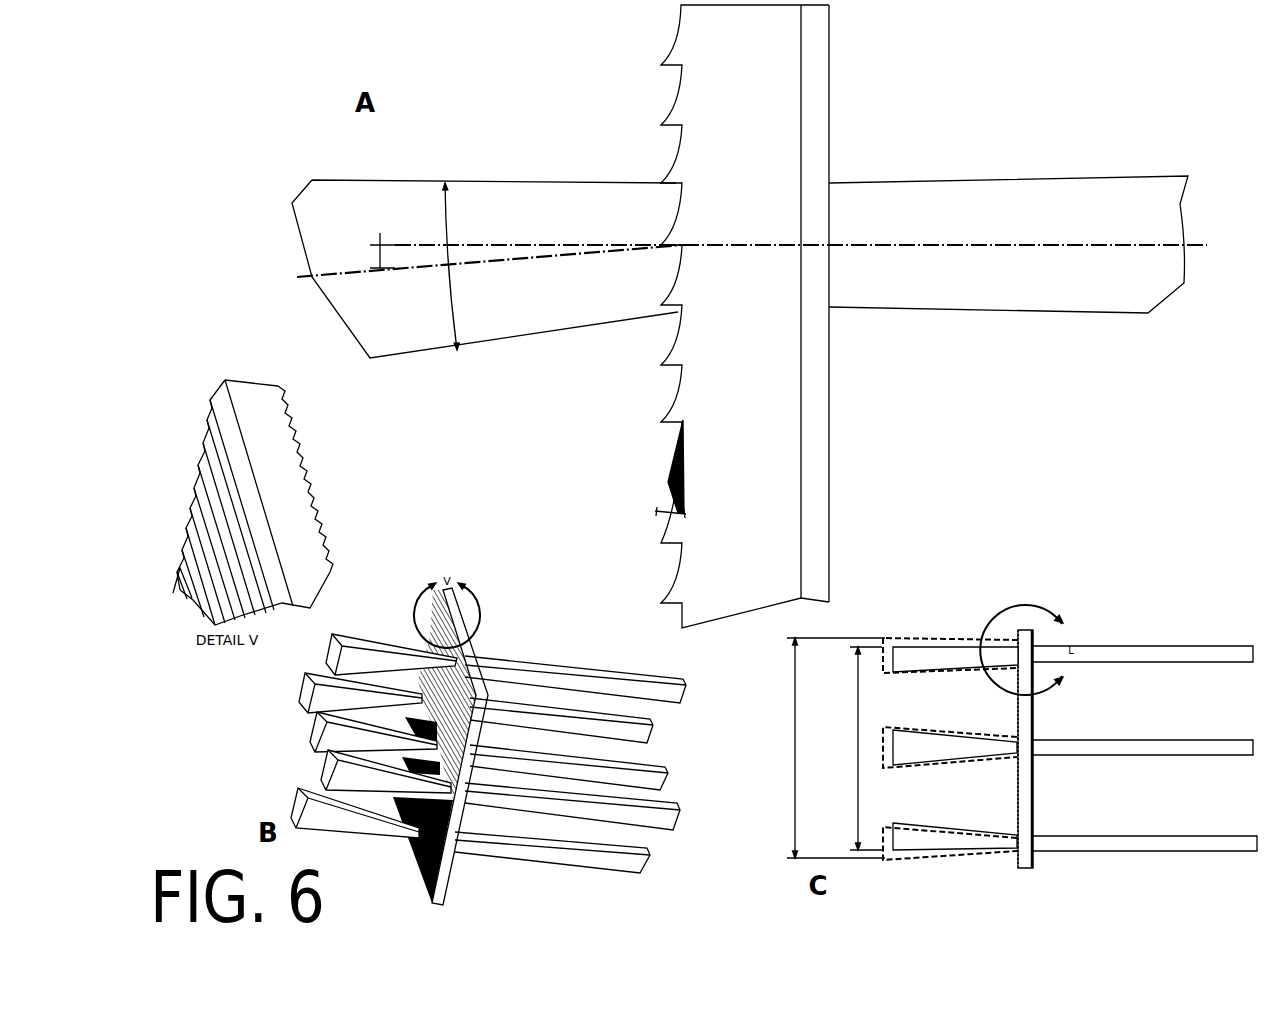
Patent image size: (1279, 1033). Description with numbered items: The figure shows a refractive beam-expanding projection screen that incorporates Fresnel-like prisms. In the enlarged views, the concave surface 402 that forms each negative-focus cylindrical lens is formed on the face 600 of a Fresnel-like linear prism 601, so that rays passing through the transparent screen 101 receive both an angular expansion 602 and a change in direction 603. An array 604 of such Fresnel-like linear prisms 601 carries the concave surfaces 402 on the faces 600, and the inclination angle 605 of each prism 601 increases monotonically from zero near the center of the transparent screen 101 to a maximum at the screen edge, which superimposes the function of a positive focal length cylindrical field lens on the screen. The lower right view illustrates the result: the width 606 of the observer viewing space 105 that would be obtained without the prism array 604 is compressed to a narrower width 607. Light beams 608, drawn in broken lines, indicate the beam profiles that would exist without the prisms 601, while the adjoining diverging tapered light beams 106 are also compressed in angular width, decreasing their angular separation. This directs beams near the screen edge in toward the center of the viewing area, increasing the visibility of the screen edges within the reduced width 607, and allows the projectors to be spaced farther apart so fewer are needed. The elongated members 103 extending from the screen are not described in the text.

The transparent screen 101 is at (265, 400).
The rods 103 is at (665, 765).
The observer viewing space 105 is at (234, 724).
The diverging tapered light beams 106 is at (310, 742).
The concave surface 402 is at (670, 97).
The face 600 is at (655, 110).
The Fresnel-like linear prism 601 is at (673, 117).
The angular expansion 602 is at (452, 266).
The change in direction 603 is at (380, 238).
The array of Fresnel-like linear prisms 604 is at (640, 400).
The inclination angle 605 is at (682, 478).
The width of the observer viewing space 606 is at (832, 736).
The narrower width 607 is at (859, 732).
The light beams 608 is at (885, 638).